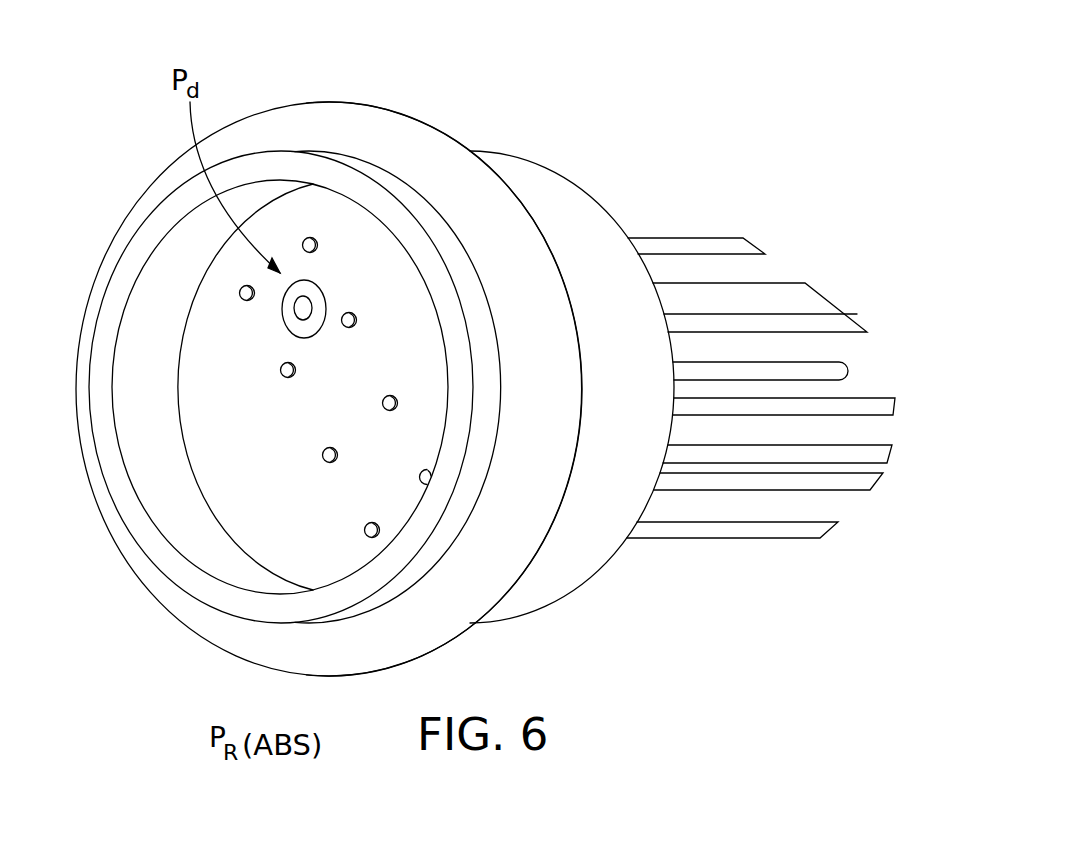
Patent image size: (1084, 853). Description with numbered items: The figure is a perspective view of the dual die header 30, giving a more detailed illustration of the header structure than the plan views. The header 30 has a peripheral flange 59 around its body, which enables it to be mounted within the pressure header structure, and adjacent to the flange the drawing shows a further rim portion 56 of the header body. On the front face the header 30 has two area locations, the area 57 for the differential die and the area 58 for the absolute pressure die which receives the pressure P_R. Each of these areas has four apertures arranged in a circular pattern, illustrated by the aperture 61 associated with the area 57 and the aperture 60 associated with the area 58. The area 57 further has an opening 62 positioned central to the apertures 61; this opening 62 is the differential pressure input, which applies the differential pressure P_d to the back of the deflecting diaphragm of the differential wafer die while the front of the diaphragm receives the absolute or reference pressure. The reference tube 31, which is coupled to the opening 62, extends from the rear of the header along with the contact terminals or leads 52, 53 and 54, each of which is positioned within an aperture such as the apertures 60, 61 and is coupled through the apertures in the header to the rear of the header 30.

The double die header 30 is at (827, 160).
The reference tube 31 is at (837, 325).
The contact terminal 52 is at (668, 238).
The contact terminal 53 is at (850, 482).
The contact terminal 54 is at (760, 532).
The flange 56 is at (447, 147).
The area location 57 is at (337, 247).
The area location 58 is at (338, 535).
The peripheral flange 59 is at (497, 273).
The aperture 60 is at (383, 406).
The aperture 61 is at (350, 313).
The opening 62 is at (280, 323).